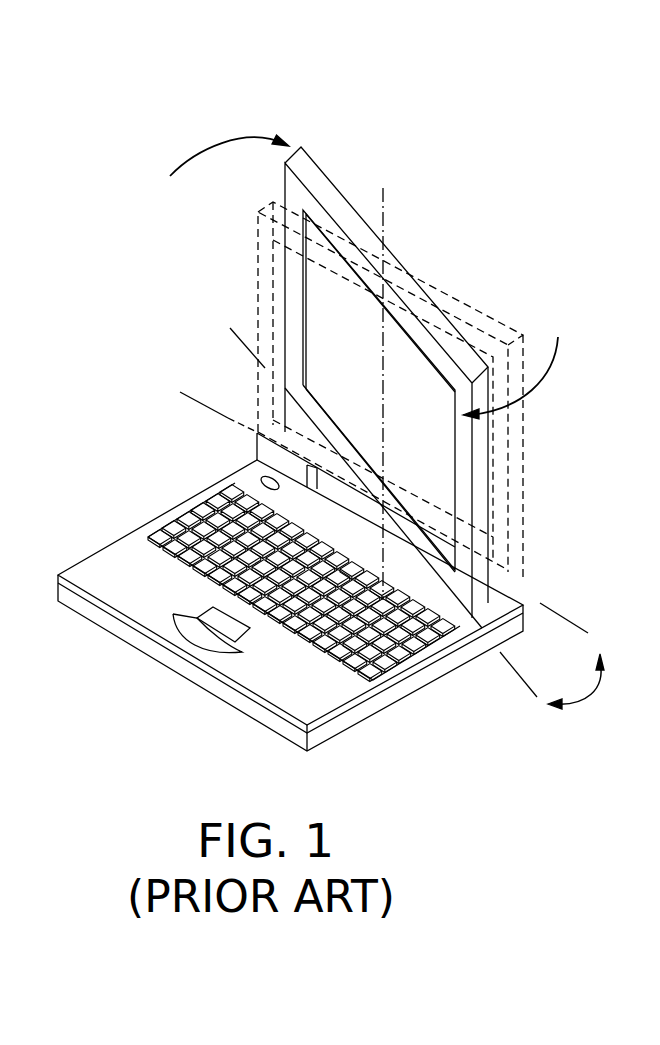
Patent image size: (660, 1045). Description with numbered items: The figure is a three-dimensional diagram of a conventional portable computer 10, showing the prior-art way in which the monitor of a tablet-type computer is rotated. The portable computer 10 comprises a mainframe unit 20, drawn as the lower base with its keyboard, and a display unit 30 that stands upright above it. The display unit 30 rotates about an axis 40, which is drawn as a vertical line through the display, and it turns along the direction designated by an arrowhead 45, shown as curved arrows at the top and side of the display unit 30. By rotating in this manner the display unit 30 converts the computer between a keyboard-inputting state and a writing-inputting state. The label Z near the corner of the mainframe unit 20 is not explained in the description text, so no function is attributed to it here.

The portable computer 10 is at (65, 137).
The mainframe unit 20 is at (122, 523).
The display unit 30 is at (300, 262).
The axis 40 is at (382, 376).
The arrowhead 45 is at (213, 135).
The Z rotation axis Z is at (578, 660).